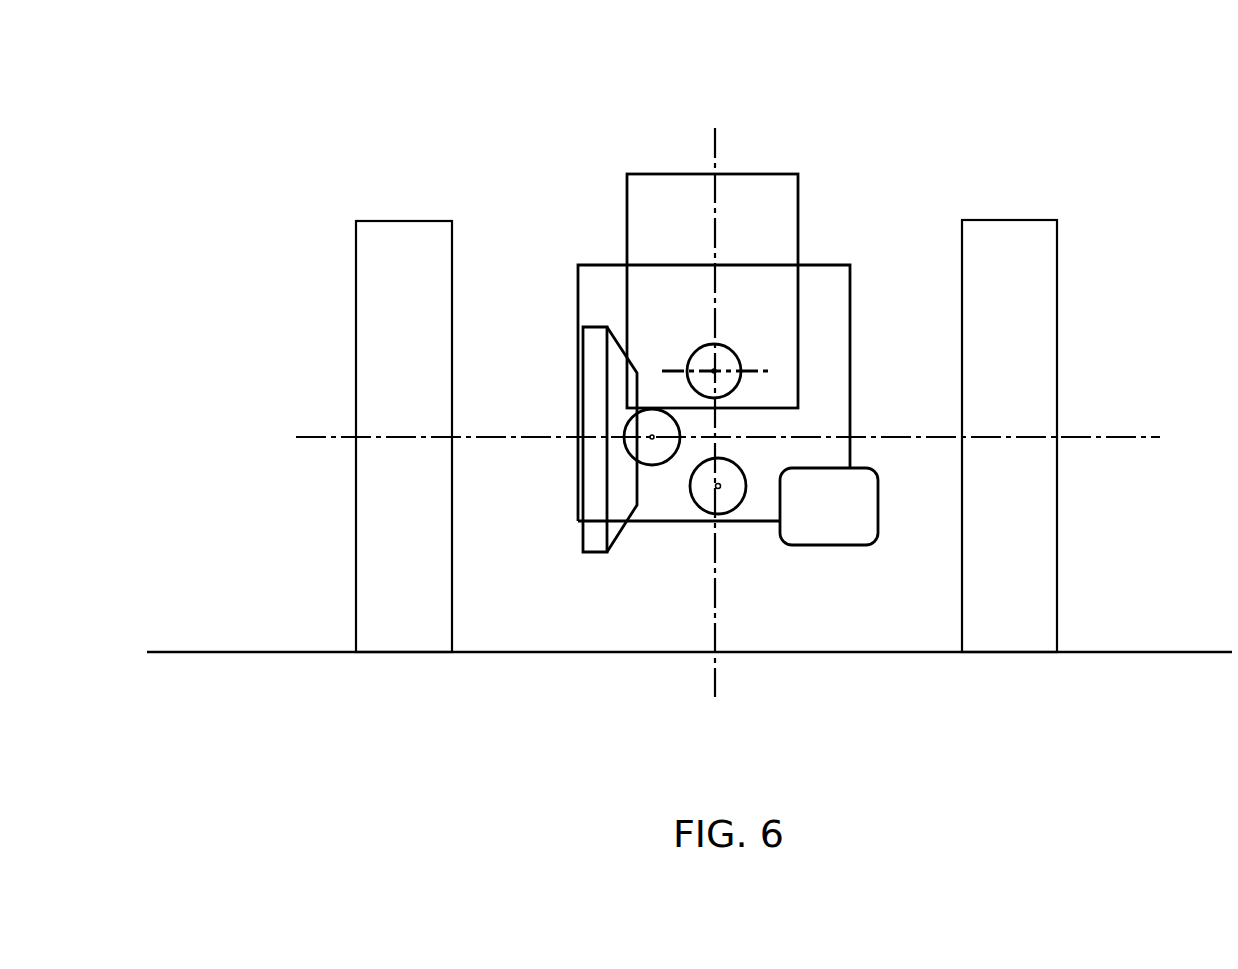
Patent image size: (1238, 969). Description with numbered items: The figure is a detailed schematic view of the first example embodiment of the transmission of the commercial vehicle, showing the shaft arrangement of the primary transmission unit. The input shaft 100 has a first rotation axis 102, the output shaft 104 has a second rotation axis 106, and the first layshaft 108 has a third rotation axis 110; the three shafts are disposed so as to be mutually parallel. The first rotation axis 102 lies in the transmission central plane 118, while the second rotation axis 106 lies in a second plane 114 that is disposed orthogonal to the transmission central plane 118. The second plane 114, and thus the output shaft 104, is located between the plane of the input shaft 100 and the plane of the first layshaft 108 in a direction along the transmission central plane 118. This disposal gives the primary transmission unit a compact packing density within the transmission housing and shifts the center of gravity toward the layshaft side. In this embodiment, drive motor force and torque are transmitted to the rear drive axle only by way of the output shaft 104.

The input shaft 100 is at (728, 382).
The first rotation axis 102 is at (714, 371).
The output shaft 104 is at (667, 428).
The second rotation axis 106 is at (652, 437).
The first layshaft 108 is at (735, 486).
The third rotation axis 110 is at (718, 486).
The second plane 114 is at (314, 437).
The transmission central plane 118 is at (713, 136).